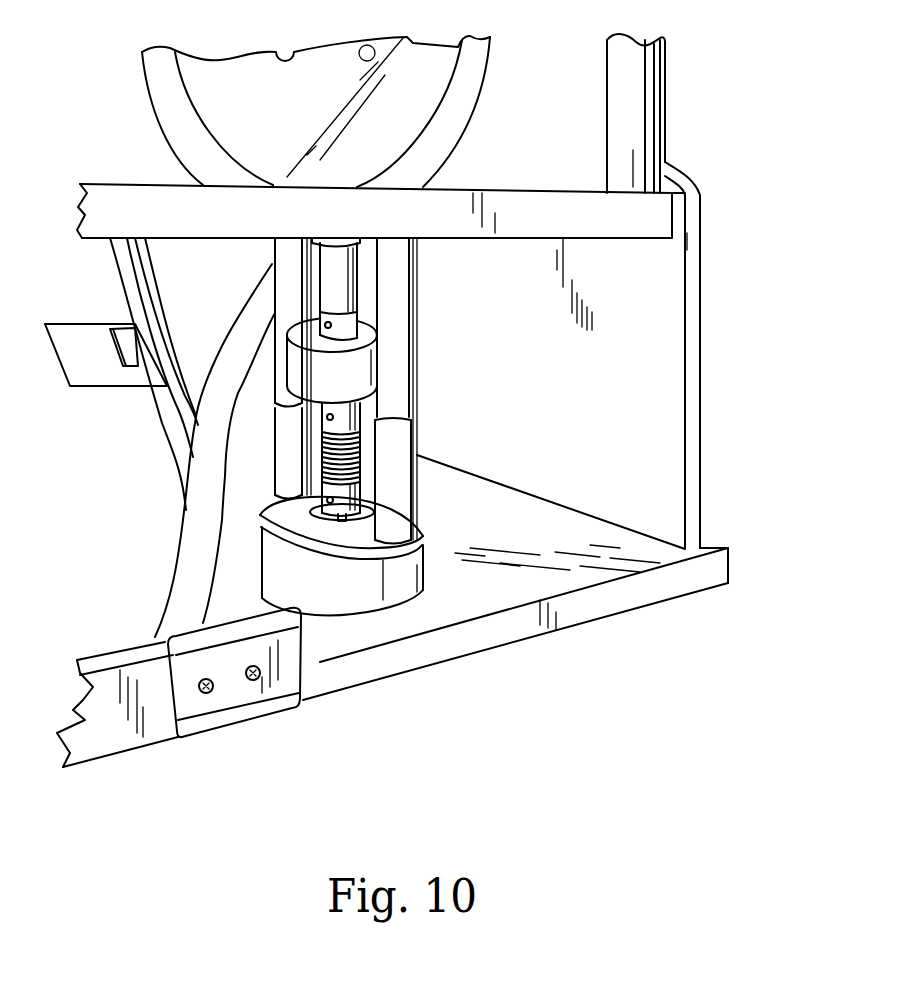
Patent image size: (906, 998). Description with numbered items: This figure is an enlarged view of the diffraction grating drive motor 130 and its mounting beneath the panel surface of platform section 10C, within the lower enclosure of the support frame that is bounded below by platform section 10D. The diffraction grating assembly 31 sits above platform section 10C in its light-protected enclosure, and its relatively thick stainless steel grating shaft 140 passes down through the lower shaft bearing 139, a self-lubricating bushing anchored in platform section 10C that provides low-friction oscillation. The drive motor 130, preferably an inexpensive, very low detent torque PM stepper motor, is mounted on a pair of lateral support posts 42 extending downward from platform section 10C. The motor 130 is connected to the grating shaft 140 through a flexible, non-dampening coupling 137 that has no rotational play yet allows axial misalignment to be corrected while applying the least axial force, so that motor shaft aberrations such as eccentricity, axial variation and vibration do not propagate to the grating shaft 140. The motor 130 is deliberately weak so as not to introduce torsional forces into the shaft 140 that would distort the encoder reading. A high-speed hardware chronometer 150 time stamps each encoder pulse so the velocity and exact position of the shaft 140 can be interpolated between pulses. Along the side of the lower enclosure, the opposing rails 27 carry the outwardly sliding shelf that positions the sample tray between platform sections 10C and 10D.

The platform section 10C is at (667, 212).
The platform section 10D is at (718, 575).
The diffraction grating assembly 31 is at (212, 98).
The lower shaft bearing 139 is at (326, 243).
The grating shaft 140 is at (352, 287).
The chronometer 150 is at (110, 329).
The upright posts 42 is at (390, 492).
The diffraction grating drive motor 130 is at (362, 585).
The flexible coupling 137 is at (345, 518).
The rails 27 is at (302, 618).